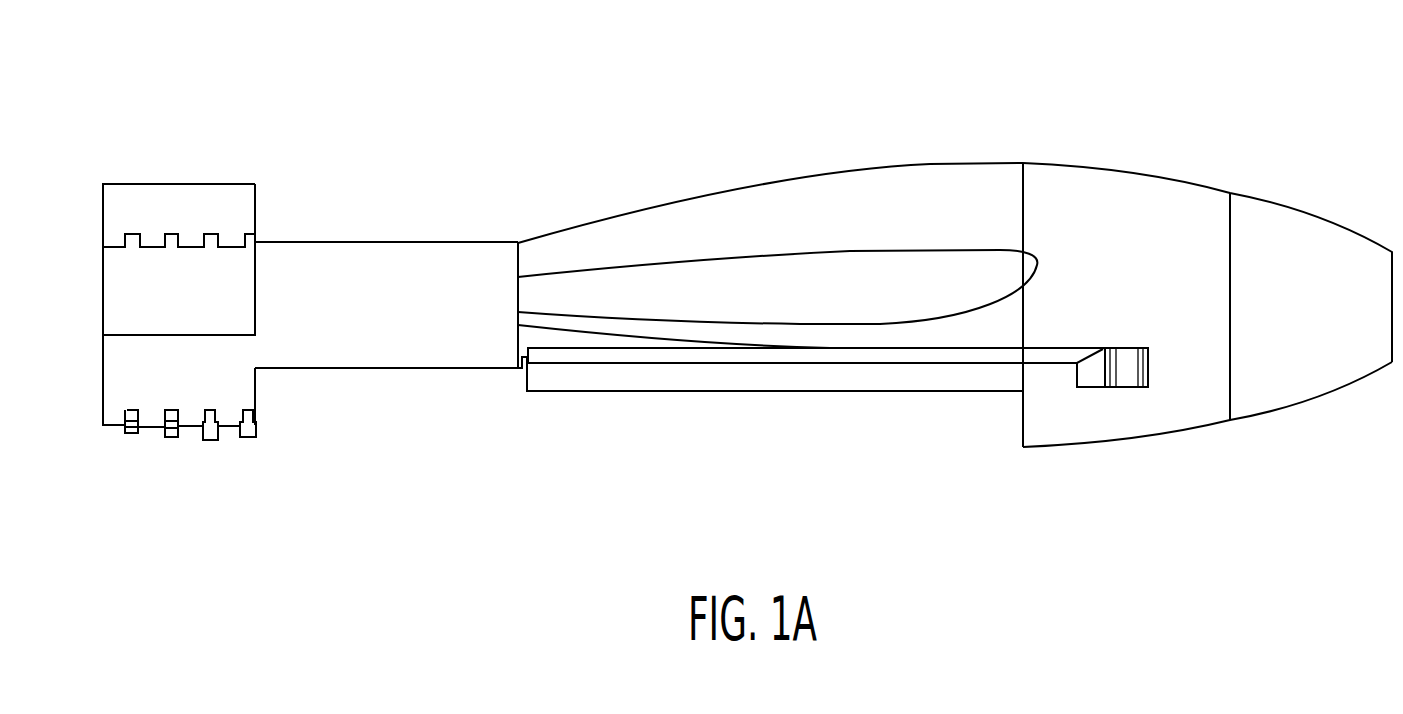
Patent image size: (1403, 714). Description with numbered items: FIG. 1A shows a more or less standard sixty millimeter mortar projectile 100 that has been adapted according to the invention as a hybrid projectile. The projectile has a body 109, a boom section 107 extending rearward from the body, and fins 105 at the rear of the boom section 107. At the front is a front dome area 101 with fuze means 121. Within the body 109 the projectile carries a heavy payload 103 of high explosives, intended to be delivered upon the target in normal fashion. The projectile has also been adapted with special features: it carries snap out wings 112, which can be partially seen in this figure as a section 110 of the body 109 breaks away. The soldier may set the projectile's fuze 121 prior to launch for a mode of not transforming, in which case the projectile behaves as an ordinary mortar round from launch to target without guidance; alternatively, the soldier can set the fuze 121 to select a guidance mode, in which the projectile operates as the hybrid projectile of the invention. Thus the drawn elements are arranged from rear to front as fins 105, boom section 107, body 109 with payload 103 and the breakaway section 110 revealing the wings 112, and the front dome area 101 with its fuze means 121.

The probe device 100 is at (577, 52).
The front dome area 101 is at (1282, 203).
The payload 103 is at (972, 172).
The fins 105 is at (215, 184).
The boom section 107 is at (410, 242).
The body 109 is at (750, 187).
The section of body 110 is at (668, 392).
The snap out wings 112 is at (1023, 418).
The fuze means 121 is at (1315, 392).